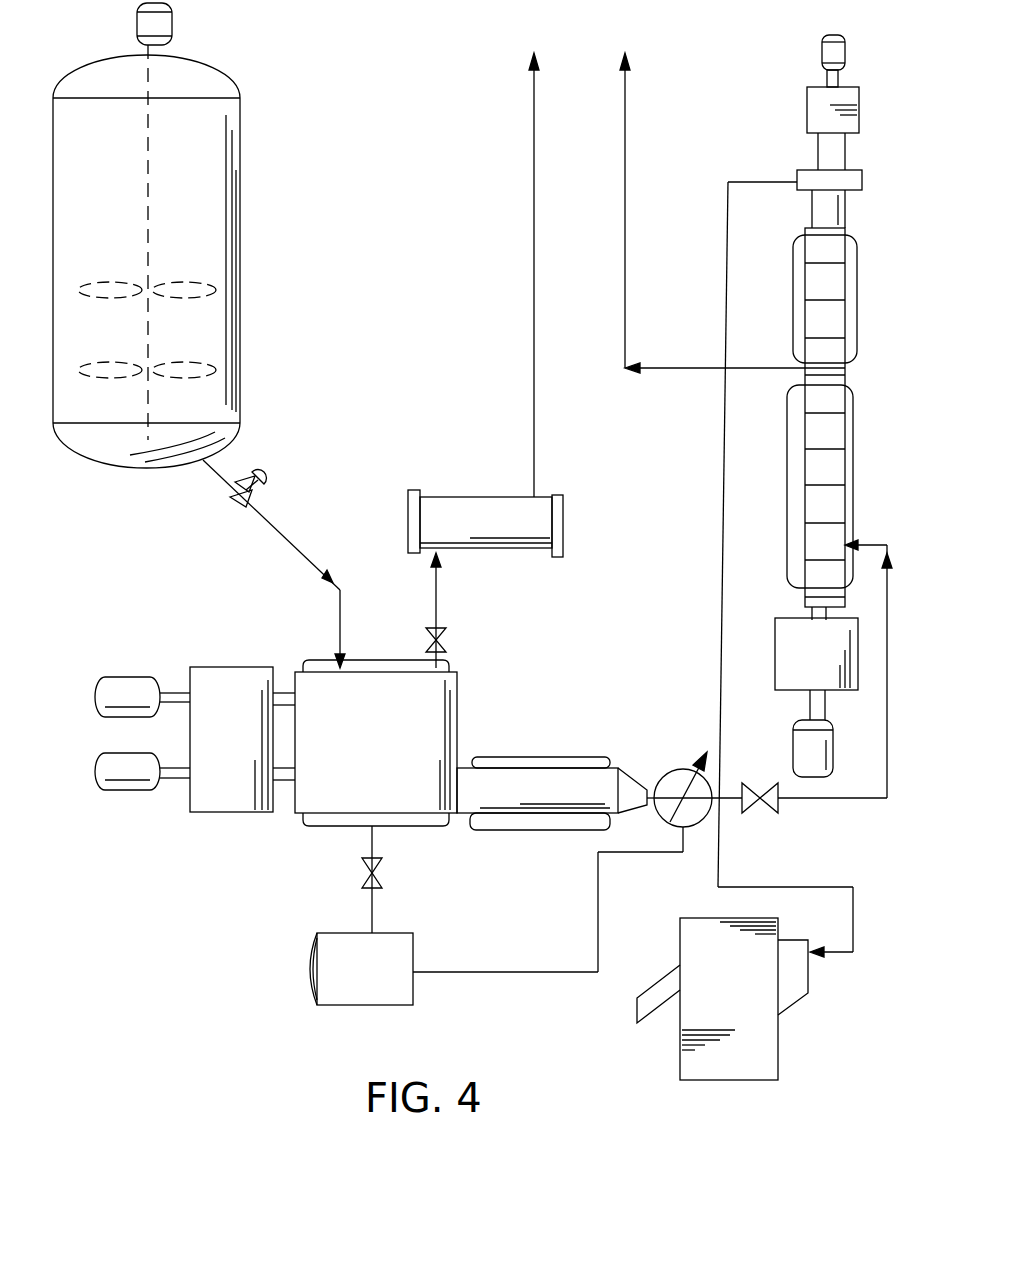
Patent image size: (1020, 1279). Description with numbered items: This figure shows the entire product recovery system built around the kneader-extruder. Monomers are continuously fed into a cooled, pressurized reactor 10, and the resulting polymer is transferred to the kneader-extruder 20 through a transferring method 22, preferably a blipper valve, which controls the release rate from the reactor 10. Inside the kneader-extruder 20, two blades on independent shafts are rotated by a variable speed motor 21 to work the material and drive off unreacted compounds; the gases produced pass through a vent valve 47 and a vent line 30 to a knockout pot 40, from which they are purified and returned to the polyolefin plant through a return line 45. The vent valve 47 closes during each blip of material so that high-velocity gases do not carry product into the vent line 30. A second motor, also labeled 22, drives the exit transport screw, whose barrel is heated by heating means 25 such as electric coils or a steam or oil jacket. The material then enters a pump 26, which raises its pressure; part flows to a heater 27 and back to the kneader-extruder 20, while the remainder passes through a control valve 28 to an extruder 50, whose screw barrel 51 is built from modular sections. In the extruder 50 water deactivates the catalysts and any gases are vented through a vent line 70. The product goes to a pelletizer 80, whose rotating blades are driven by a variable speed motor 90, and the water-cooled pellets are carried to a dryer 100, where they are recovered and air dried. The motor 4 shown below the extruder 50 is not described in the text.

The reactor 10 is at (240, 170).
The transferring method 22 is at (262, 474).
The variable speed motor 21 is at (102, 690).
The kneader-extruder 20 is at (457, 680).
The heating means 25 is at (528, 832).
The vent line 30 is at (436, 592).
The vent valve 47 is at (447, 640).
The knockout pot 40 is at (475, 497).
The return line 45 is at (534, 190).
The vent line 70 is at (625, 108).
The variable speed motor 90 is at (822, 50).
The pelletizer 80 is at (812, 200).
The extruder 50 is at (848, 372).
The screw barrel 51 is at (806, 466).
The motor 4 is at (796, 744).
The pump 26 is at (660, 780).
The control valve 28 is at (768, 813).
The heater 27 is at (376, 989).
The dryer 100 is at (680, 934).